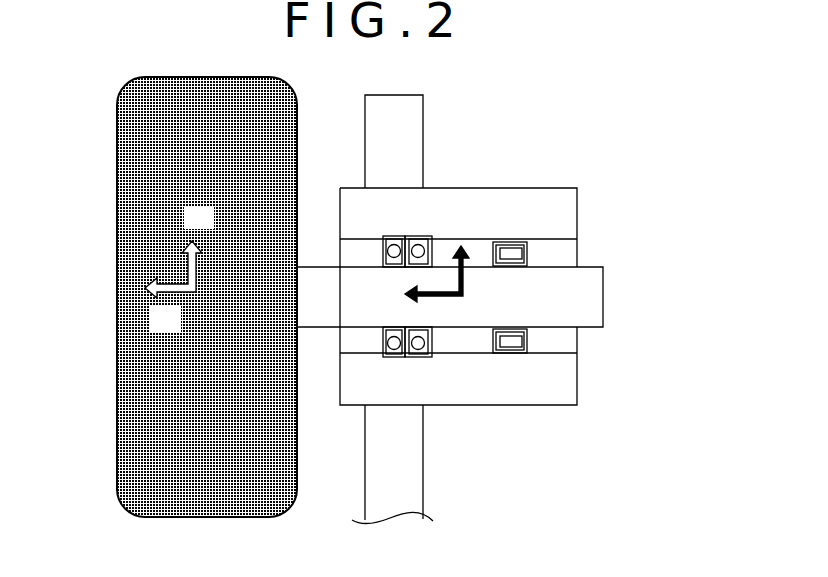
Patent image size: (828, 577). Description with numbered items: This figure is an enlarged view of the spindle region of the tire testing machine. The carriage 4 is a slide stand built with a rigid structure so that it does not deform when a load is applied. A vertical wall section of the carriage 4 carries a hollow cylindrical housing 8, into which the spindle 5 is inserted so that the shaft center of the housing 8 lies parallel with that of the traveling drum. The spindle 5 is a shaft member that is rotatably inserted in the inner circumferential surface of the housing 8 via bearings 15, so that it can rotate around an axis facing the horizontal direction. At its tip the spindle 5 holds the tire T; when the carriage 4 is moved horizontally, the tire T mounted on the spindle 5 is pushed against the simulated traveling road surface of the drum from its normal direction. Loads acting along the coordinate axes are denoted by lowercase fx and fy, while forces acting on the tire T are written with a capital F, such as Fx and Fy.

The tire T is at (212, 86).
The carriage 4 is at (409, 110).
The housing 8 is at (553, 198).
The spindle 5 is at (593, 300).
The bearings 15 is at (420, 237).